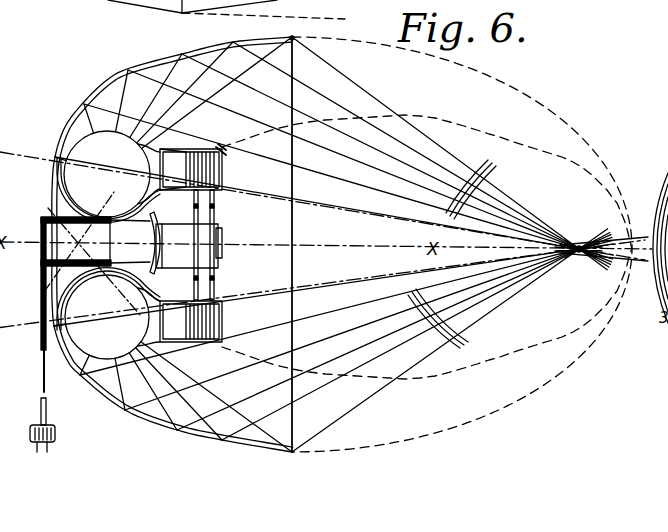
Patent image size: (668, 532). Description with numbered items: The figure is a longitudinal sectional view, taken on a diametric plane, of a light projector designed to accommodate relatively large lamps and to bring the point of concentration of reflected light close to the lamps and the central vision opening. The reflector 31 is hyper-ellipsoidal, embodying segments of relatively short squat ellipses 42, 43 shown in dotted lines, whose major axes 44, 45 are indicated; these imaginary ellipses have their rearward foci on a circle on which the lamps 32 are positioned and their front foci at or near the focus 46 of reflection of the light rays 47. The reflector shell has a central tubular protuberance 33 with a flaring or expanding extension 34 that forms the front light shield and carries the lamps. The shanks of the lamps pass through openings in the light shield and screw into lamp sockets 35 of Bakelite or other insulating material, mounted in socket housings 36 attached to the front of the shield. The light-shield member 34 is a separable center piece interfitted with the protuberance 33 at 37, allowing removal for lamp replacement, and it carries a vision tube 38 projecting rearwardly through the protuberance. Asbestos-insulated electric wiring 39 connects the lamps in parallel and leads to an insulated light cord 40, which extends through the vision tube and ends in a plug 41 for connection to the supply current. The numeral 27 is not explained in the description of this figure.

The reflector of adjacent figure 27 is at (270, 22).
The reflector 31 is at (134, 66).
The lamps 32 is at (92, 145).
The central tubular protuberance of the reflector shell 33 is at (57, 206).
The flaring extension 34 is at (160, 142).
The lamp sockets 35 is at (222, 147).
The socket housings 36 is at (224, 193).
The interfitting joint 37 is at (112, 231).
The vision tube 38 is at (46, 221).
The electric wiring 39 is at (222, 258).
The electric light cord 40 is at (48, 390).
The plug 41 is at (56, 434).
The ellipse 42 is at (573, 137).
The ellipse 43 is at (573, 162).
The major axis 44 is at (330, 207).
The major axis 45 is at (326, 284).
The focus of reflection 46 is at (579, 256).
The light rays 47 is at (468, 164).